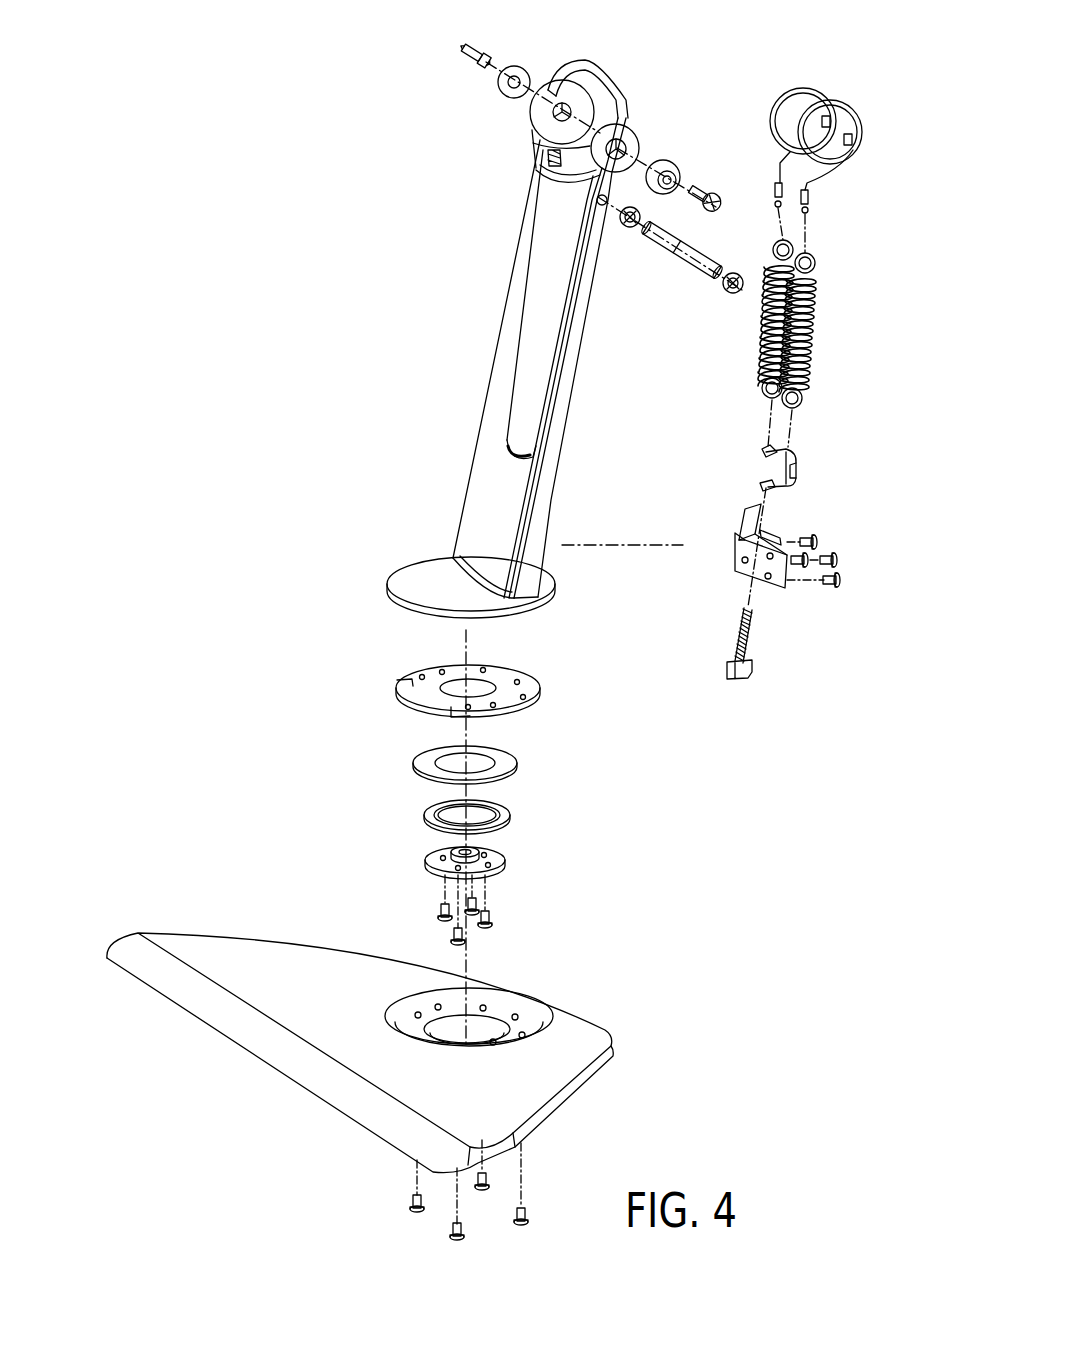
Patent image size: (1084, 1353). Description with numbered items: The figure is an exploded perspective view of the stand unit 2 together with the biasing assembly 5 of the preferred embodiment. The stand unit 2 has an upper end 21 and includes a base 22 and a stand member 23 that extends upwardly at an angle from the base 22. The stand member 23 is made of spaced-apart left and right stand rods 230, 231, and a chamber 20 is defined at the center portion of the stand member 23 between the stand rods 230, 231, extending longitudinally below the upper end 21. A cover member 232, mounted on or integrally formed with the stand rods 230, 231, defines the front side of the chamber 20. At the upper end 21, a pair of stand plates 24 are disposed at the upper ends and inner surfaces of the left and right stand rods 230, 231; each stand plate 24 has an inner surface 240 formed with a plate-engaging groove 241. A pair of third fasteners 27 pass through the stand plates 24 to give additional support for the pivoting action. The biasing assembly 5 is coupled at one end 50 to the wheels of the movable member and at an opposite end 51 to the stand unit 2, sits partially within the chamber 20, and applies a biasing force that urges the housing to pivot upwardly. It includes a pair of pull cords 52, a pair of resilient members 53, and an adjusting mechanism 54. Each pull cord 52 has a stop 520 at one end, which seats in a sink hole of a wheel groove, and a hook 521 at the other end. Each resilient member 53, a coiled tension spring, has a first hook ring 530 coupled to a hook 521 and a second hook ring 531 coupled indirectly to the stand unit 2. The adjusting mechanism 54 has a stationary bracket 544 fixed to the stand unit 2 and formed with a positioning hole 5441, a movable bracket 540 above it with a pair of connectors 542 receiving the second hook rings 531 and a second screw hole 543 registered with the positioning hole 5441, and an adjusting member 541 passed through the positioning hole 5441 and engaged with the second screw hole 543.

The stand unit 2 is at (590, 708).
The biasing assembly 5 is at (750, 343).
The chamber 20 is at (548, 160).
The upper end 21 is at (683, 45).
The base 22 is at (572, 1023).
The stand member 23 is at (548, 502).
The stand plates 24 is at (605, 140).
The third fasteners 27 is at (463, 58).
The one end 50 is at (845, 93).
The opposite end 51 is at (845, 558).
The pull cords 52 is at (850, 158).
The resilient members 53 is at (820, 325).
The adjusting mechanism 54 is at (759, 652).
The left stand rod 230 is at (540, 147).
The right stand rod 231 is at (608, 168).
The cover member 232 is at (537, 303).
The inner surface 240 is at (548, 88).
The plate-engaging groove 241 is at (588, 102).
The stop 520 is at (846, 136).
The hook 521 is at (808, 212).
The first hook ring 530 is at (812, 265).
The second hook ring 531 is at (805, 398).
The movable bracket 540 is at (798, 462).
The adjusting member 541 is at (740, 626).
The connectors 542 is at (768, 452).
The second screw hole 543 is at (765, 480).
The stationary bracket 544 is at (770, 587).
The positioning hole 5441 is at (763, 533).